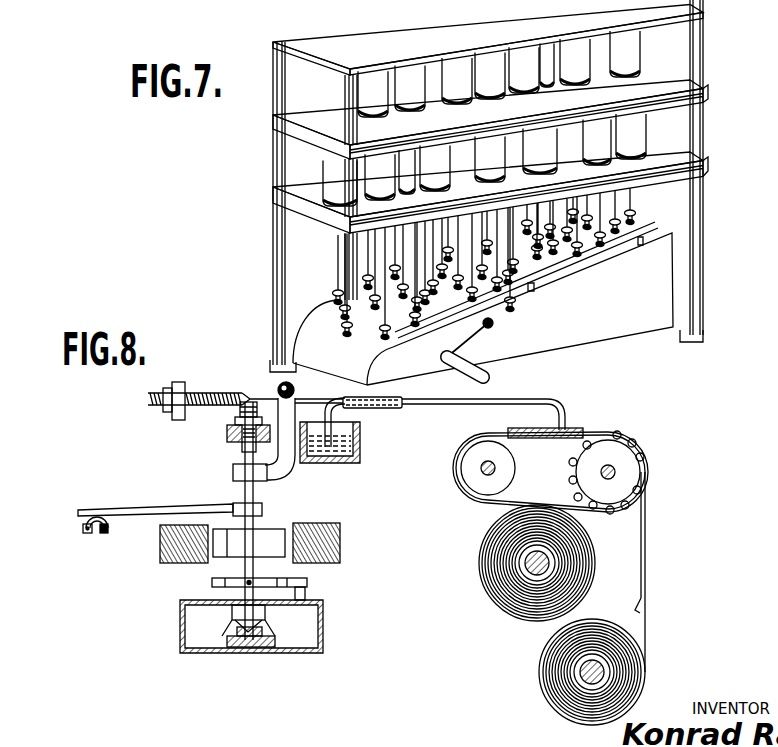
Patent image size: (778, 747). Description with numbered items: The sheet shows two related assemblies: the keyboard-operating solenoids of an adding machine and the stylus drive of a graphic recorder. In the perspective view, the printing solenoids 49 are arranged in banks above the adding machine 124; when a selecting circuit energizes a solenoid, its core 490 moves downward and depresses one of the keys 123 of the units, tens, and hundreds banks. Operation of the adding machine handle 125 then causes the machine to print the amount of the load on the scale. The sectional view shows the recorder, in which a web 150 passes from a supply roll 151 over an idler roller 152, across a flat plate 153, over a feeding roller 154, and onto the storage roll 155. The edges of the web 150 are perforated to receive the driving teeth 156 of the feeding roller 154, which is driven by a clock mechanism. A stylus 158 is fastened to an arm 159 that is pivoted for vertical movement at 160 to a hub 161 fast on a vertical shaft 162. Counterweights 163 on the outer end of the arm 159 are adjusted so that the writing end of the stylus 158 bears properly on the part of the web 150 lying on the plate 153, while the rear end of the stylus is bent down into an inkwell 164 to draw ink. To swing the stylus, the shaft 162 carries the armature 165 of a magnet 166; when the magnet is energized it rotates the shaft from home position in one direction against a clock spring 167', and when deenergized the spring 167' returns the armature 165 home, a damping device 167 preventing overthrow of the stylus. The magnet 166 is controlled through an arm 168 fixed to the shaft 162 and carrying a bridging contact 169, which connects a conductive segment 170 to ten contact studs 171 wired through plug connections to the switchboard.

In FIG. 7, the printing solenoids 49 is at (345, 183).
In FIG. 7, the cores 490 is at (340, 249).
In FIG. 7, the keys 123 is at (377, 313).
In FIG. 7, the adding machine 124 is at (590, 318).
In FIG. 7, the adding machine handle 125 is at (494, 325).
In FIG. 8, the web 150 is at (580, 430).
In FIG. 8, the supply roll 151 is at (510, 582).
In FIG. 8, the idler roller 152 is at (476, 478).
In FIG. 8, the flat plate 153 is at (525, 439).
In FIG. 8, the feeding roller 154 is at (628, 478).
In FIG. 8, the storage roll 155 is at (555, 672).
In FIG. 8, the driving teeth 156 is at (583, 506).
In FIG. 8, the stylus 158 is at (458, 404).
In FIG. 8, the arm 159 is at (340, 397).
In FIG. 8, the pivot 160 is at (279, 388).
In FIG. 8, the hub 161 is at (282, 467).
In FIG. 8, the vertical shaft 162 is at (246, 490).
In FIG. 8, the counterweights 163 is at (180, 383).
In FIG. 8, the inkwell 164 is at (343, 452).
In FIG. 8, the armature 165 is at (237, 542).
In FIG. 8, the magnet 166 is at (342, 543).
In FIG. 8, the damping device 167 is at (251, 641).
In FIG. 8, the clock spring 167' is at (294, 581).
In FIG. 8, the arm 168 is at (143, 509).
In FIG. 8, the bridging contact 169 is at (85, 522).
In FIG. 8, the conductive segment 170 is at (105, 533).
In FIG. 8, the contact studs 171 is at (83, 534).